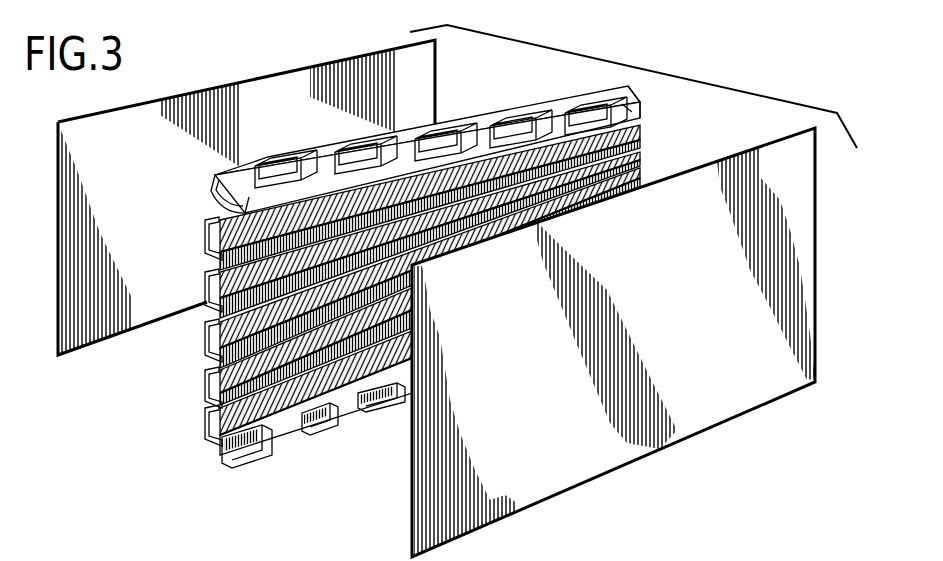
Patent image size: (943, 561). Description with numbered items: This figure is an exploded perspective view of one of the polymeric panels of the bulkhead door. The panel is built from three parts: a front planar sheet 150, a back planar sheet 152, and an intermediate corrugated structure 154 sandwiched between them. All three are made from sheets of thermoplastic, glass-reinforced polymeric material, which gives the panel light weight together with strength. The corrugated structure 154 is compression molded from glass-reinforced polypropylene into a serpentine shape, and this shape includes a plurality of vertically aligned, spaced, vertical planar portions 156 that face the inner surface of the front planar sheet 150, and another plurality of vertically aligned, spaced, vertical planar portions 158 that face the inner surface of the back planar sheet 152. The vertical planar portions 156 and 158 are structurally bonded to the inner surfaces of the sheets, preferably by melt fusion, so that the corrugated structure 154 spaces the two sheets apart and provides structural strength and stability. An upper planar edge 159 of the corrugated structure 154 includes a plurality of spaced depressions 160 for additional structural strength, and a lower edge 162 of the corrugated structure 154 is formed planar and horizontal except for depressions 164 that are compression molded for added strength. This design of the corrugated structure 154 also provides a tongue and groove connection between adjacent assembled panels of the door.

The front planar sheet 150 is at (690, 324).
The back planar sheet 152 is at (401, 271).
The intermediate corrugated structure 154 is at (641, 100).
The vertical planar portions 156 is at (207, 422).
The vertical planar portions 158 is at (203, 327).
The upper planar edge 159 is at (215, 174).
The spaced depressions 160 is at (277, 163).
The lower edge 162 is at (237, 457).
The depressions 164 is at (387, 403).